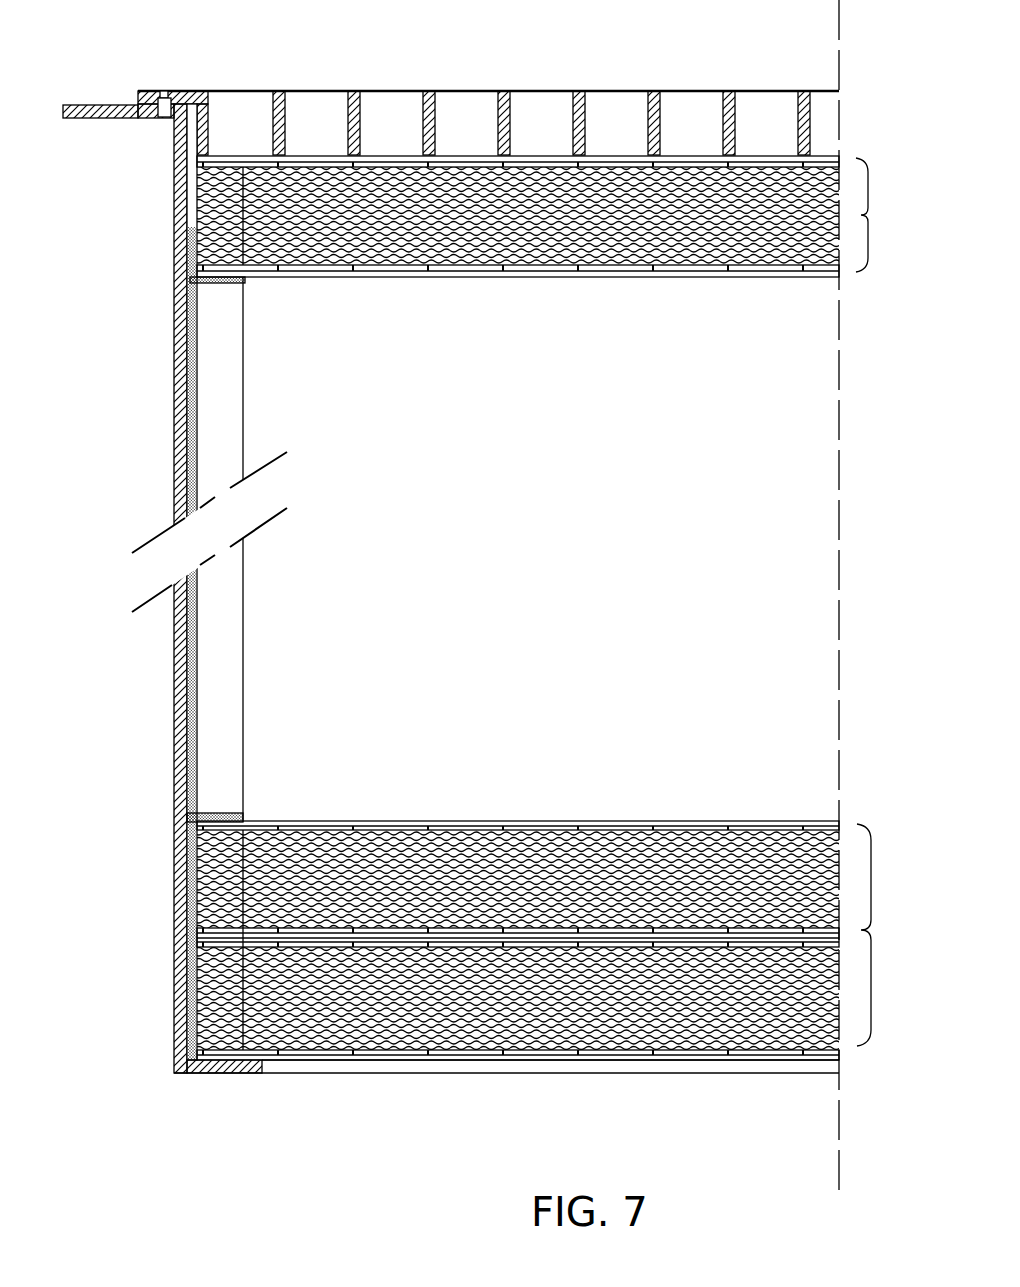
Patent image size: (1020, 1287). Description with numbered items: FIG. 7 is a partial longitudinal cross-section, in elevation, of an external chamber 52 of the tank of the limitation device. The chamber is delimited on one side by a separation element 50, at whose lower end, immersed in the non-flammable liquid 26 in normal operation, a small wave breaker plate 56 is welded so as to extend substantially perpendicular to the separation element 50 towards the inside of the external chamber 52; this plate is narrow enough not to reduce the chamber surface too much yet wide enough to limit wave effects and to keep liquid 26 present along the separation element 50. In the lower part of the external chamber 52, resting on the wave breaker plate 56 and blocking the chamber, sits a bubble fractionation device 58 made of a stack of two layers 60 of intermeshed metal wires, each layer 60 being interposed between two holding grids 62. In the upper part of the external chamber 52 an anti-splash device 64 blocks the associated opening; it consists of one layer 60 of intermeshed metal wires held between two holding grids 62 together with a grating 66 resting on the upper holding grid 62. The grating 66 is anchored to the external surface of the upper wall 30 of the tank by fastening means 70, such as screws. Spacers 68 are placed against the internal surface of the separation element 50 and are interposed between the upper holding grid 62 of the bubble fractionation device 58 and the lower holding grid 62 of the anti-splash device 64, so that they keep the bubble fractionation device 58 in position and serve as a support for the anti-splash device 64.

The non-flammable liquid 26 is at (779, 1147).
The upper wall 30 is at (115, 106).
The separation element 50 is at (174, 890).
The external chamber 52 is at (549, 529).
The wave breaker plate 56 is at (195, 1075).
The bubble fractionation device 58 is at (883, 935).
The layer of intermeshed metal wires 60 is at (667, 243).
The holding grid 62 is at (523, 158).
The anti-splash device 64 is at (880, 215).
The grating 66 is at (280, 127).
The spacer 68 is at (187, 732).
The fastening means 70 is at (165, 120).